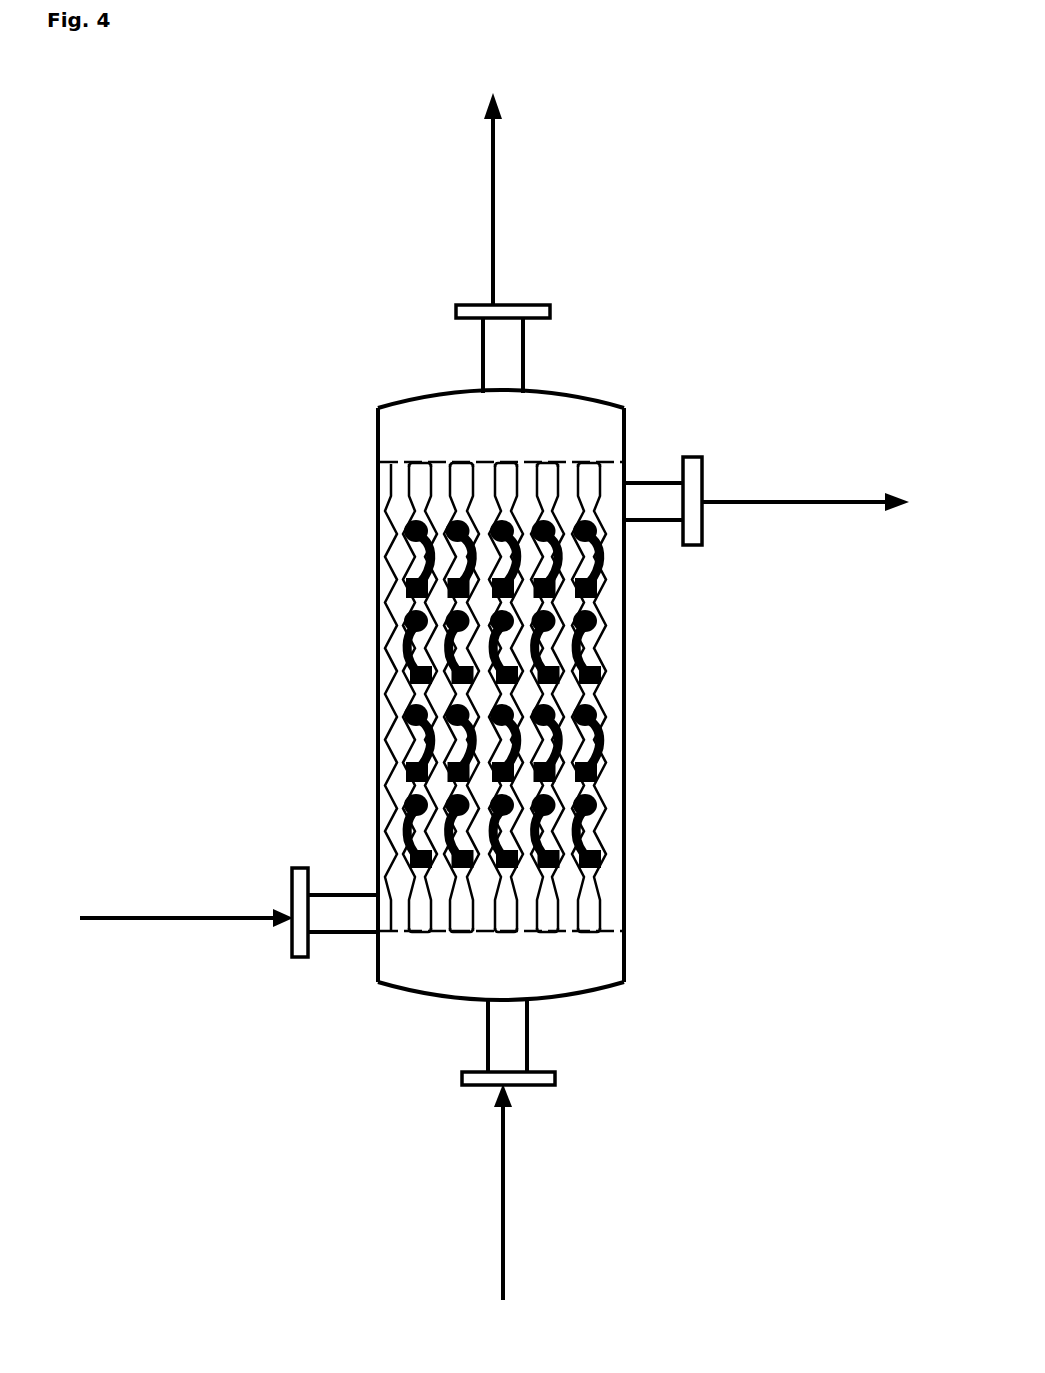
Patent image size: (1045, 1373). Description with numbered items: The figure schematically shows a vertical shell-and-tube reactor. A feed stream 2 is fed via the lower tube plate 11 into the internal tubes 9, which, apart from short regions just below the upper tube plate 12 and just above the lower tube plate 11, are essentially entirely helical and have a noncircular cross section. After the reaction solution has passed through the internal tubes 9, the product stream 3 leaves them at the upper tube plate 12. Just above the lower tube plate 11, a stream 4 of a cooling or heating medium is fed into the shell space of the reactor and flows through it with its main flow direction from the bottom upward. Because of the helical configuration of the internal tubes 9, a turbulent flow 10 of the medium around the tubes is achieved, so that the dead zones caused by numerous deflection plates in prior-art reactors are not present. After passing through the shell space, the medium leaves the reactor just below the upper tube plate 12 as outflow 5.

The feed stream 2 is at (503, 1183).
The product stream 3 is at (498, 178).
The inflowing stream of cooling or heating medium 4 is at (148, 918).
The outflowing stream of cooling or heating medium 5 is at (817, 502).
The internal tubes 9 is at (415, 933).
The turbulent flow 10 is at (590, 810).
The lower tube plate 11 is at (422, 937).
The upper tube plate 12 is at (535, 447).